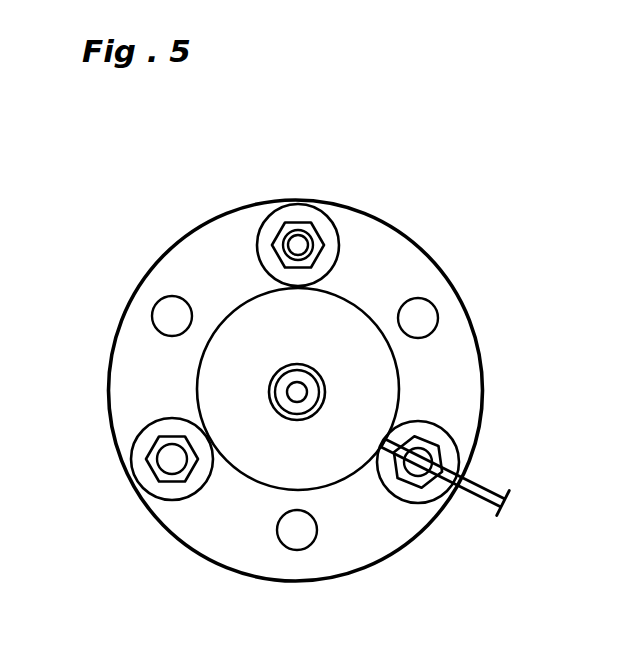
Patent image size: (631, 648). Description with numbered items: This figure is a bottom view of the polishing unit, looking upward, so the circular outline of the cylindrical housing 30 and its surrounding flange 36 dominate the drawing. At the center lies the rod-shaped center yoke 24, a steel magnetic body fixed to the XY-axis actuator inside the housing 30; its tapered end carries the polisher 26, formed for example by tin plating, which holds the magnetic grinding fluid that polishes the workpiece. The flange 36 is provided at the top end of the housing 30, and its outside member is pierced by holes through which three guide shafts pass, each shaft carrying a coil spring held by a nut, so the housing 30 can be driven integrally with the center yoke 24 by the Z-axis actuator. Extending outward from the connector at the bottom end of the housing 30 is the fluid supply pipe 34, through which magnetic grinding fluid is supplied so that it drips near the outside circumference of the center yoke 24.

The center yoke 24 is at (290, 400).
The polisher 26 is at (297, 390).
The cylindrical housing 30 is at (397, 380).
The fluid supply pipe 34 is at (485, 488).
The flange 36 is at (397, 268).